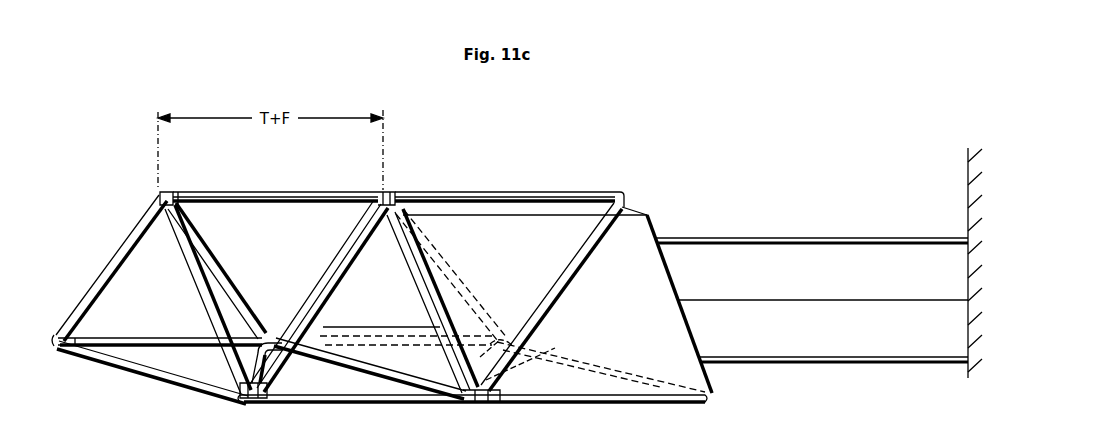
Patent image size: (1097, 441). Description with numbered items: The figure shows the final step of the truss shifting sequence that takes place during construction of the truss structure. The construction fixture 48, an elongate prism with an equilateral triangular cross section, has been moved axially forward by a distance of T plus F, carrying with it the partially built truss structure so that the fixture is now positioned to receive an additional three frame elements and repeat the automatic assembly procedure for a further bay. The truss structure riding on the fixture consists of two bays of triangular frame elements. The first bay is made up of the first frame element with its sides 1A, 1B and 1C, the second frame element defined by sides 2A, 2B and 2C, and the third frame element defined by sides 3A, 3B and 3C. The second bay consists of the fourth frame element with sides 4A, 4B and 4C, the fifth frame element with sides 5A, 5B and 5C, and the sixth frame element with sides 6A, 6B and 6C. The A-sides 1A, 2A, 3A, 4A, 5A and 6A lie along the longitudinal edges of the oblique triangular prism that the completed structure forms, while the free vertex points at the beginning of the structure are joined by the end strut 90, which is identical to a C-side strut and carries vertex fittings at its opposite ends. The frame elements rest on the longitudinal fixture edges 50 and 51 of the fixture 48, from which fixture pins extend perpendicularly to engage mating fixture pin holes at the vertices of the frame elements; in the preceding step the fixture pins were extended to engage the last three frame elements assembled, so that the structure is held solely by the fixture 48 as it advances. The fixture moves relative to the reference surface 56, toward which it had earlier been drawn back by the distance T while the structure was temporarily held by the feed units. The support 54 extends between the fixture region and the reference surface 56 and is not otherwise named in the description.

The A-side of the first frame element 1A is at (150, 340).
The B-side of the first frame element 1B is at (107, 263).
The C-side of the first frame element 1C is at (214, 266).
The A-side of the second frame element 2A is at (300, 190).
The B-side of the second frame element 2B is at (197, 290).
The C-side of the second frame element 2C is at (283, 368).
The A-side of the third frame element 3A is at (397, 403).
The B-side of the third frame element 3B is at (248, 352).
The C-side of the third frame element 3C is at (350, 368).
The A-side of the fourth frame element 4A is at (392, 332).
The B-side of the fourth frame element 4B is at (328, 268).
The C-side of the fourth frame element 4C is at (470, 284).
The A-side of the fifth frame element 5A is at (538, 190).
The B-side of the fifth frame element 5B is at (442, 268).
The C-side of the fifth frame element 5C is at (574, 272).
The A-side of the sixth frame element 6A is at (636, 403).
The B-side of the sixth frame element 6B is at (502, 374).
The C-side of the sixth frame element 6C is at (588, 362).
The construction fixture 48 is at (655, 226).
The longitudinal fixture edge 50 is at (708, 398).
The longitudinal fixture edge 51 is at (636, 212).
The support beam 54 is at (790, 238).
The reference surface 56 is at (968, 206).
The end strut 90 is at (133, 375).